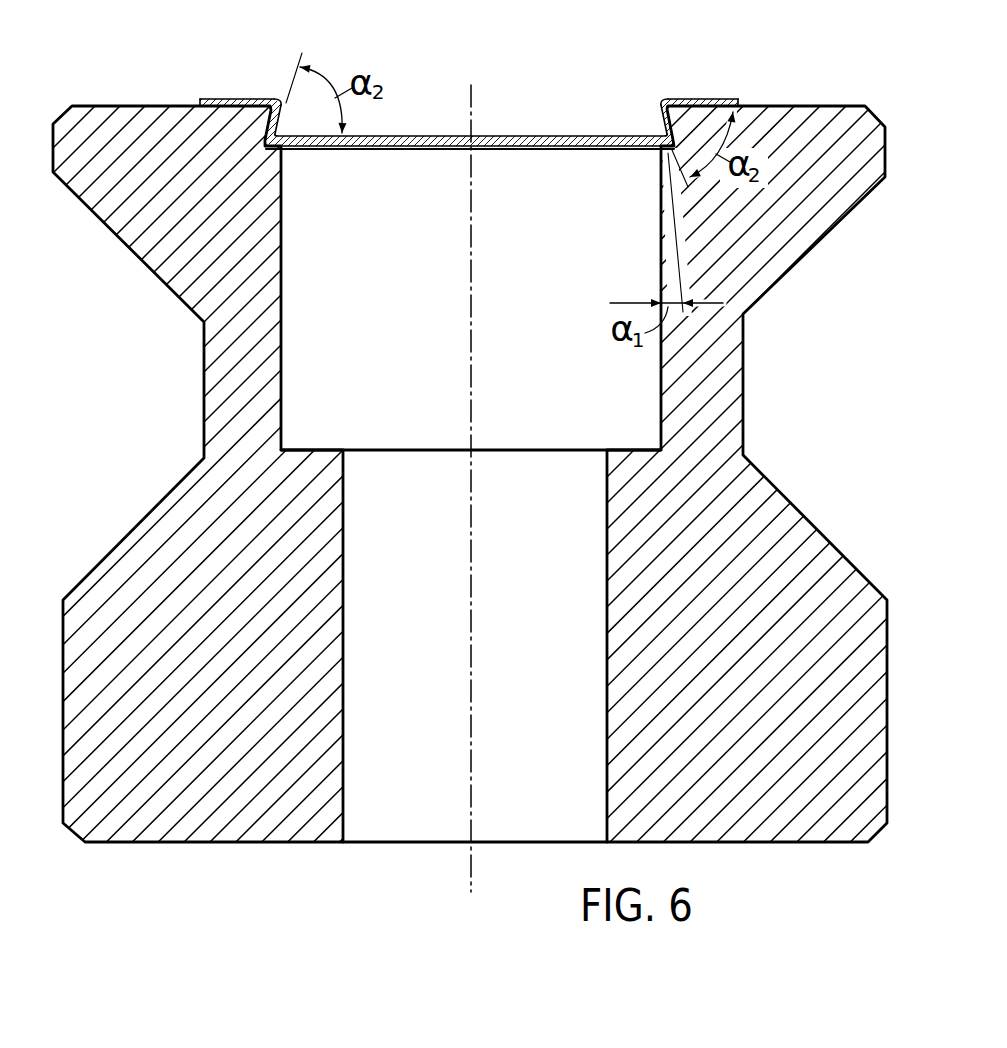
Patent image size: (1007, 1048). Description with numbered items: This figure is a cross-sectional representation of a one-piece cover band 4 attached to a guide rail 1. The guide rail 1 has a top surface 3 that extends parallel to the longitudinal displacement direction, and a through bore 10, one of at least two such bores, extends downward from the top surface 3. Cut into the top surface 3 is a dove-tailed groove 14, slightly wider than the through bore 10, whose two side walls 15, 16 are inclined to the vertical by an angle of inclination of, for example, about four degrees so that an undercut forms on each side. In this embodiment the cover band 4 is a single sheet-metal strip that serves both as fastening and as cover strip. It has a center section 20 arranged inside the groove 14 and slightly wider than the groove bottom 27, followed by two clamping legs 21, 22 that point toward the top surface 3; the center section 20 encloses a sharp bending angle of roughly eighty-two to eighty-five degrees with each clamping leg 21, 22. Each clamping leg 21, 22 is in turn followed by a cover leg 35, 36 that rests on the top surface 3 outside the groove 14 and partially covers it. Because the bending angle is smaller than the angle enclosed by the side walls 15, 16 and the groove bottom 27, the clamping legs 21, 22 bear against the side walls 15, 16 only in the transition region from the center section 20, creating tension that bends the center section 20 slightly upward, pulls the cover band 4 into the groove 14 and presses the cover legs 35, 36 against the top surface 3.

The guide rail 1 is at (503, 524).
The top surface 3 is at (96, 105).
The cover band 4 is at (737, 96).
The through bore 10 is at (393, 784).
The groove 14 is at (414, 122).
The side wall 15 is at (279, 111).
The side wall 16 is at (660, 118).
The center section 20 is at (542, 136).
The clamping leg 21 is at (272, 114).
The clamping leg 22 is at (666, 135).
The groove bottom 27 is at (494, 149).
The cover leg 35 is at (237, 99).
The cover leg 36 is at (707, 99).